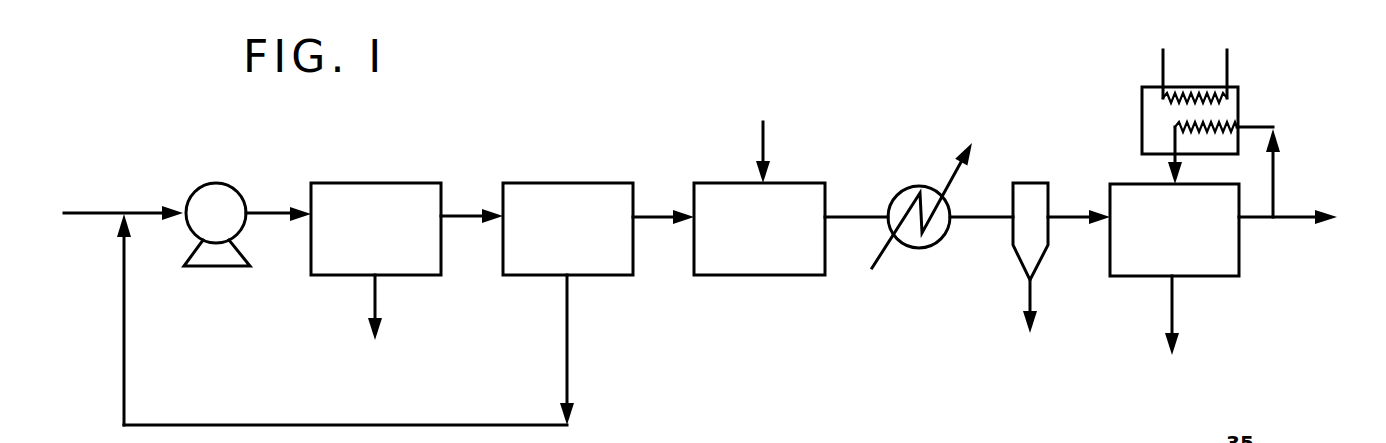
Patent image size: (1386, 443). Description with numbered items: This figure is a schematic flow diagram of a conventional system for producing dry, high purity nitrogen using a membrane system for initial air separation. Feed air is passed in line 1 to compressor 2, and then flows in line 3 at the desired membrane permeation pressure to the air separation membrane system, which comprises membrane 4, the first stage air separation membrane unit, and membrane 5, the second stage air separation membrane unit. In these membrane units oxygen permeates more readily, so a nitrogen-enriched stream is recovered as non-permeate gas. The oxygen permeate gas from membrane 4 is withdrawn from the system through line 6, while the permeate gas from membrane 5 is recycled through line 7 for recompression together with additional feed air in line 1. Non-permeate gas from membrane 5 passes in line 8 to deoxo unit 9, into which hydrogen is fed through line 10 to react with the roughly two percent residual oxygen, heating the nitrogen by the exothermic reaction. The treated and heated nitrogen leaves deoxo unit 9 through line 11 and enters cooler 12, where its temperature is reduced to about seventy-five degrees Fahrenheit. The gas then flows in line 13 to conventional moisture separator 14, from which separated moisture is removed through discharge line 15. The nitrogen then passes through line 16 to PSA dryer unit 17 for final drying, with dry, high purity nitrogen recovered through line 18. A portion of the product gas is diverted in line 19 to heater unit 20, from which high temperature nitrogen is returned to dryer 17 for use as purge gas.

The feed air line 1 is at (134, 213).
The compressor 2 is at (216, 183).
The compressed air line 3 is at (267, 213).
The first stage air separation membrane unit 4 is at (371, 183).
The second stage air separation membrane unit 5 is at (522, 183).
The permeate withdrawal line 6 is at (378, 300).
The permeate recycle line 7 is at (570, 340).
The non-permeate gas line 8 is at (647, 217).
The deoxo unit 9 is at (808, 183).
The hydrogen line 10 is at (766, 145).
The deoxo outlet line 11 is at (852, 217).
The cooler 12 is at (921, 187).
The cooled gas line 13 is at (965, 217).
The moisture separator 14 is at (1027, 183).
The discharge line 15 is at (1034, 293).
The dryer feed line 16 is at (1072, 217).
The PSA dryer unit 17 is at (1158, 276).
The product line 18 is at (1290, 217).
The purge diversion line 19 is at (1276, 167).
The heater unit 20 is at (1230, 87).